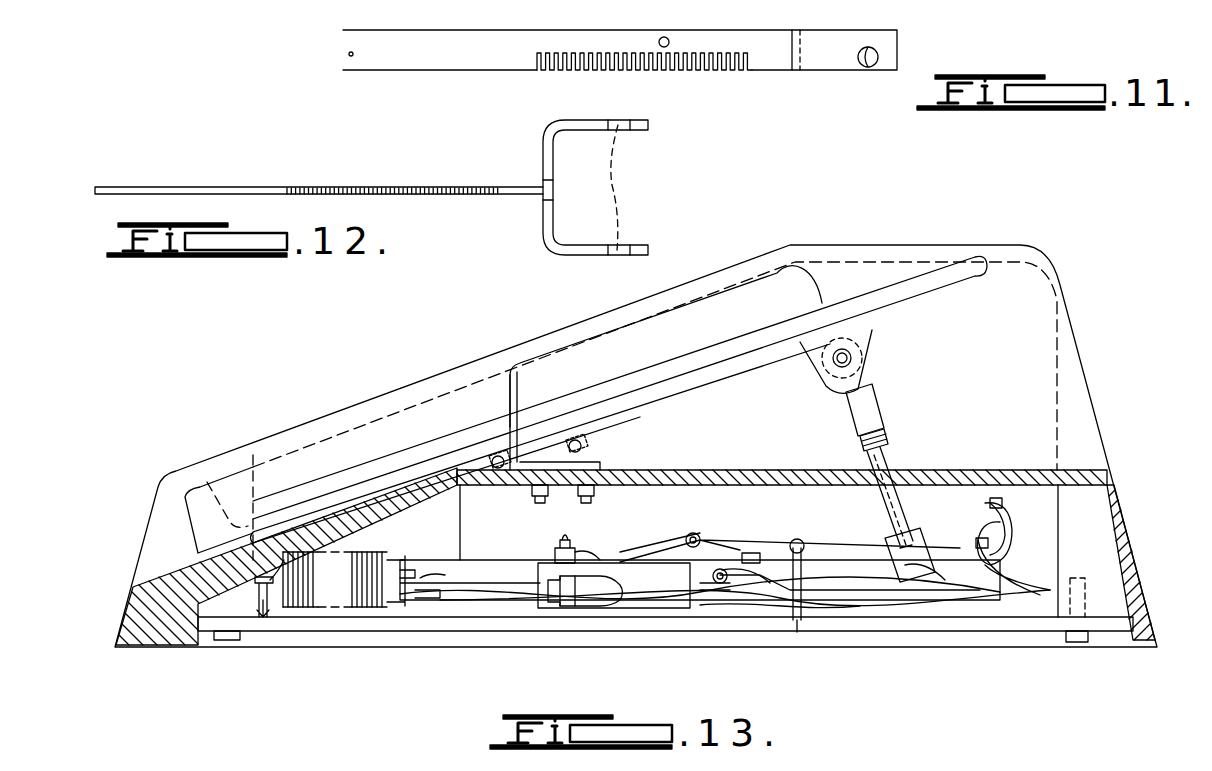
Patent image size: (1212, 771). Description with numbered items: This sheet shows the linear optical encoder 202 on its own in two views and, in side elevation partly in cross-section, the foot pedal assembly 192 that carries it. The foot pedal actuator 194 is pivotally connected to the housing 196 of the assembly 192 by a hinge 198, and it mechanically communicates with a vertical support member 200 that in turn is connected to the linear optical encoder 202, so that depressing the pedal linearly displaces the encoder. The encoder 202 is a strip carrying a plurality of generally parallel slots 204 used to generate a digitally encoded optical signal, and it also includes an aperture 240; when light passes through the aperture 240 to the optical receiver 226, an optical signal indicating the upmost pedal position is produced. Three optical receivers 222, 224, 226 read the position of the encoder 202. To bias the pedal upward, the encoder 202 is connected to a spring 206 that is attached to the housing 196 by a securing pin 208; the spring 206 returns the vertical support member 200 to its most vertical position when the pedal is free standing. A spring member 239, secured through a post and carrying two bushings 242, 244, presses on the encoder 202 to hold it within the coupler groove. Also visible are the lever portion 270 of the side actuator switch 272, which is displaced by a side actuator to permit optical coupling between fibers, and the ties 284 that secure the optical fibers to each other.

In FIG. 13, the foot pedal assembly 192 is at (1032, 245).
In FIG. 13, the foot pedal actuator 194 is at (742, 352).
In FIG. 13, the housing 196 is at (1110, 490).
In FIG. 13, the hinge 198 is at (598, 432).
In FIG. 13, the vertical support member 200 is at (887, 432).
In FIG. 11, the linear optical encoder 202 is at (903, 40).
In FIG. 12, the linear optical encoder 202 is at (190, 186).
In FIG. 13, the linear optical encoder 202 is at (428, 560).
In FIG. 11, the slots 204 is at (705, 72).
In FIG. 13, the spring 206 is at (305, 612).
In FIG. 13, the securing pin 208 is at (262, 640).
In FIG. 13, the optical receiver 222 is at (812, 585).
In FIG. 13, the optical receiver 224 is at (790, 600).
In FIG. 13, the optical receiver 226 is at (745, 592).
In FIG. 13, the spring member 239 is at (695, 533).
In FIG. 11, the aperture 240 is at (866, 68).
In FIG. 12, the aperture 240 is at (595, 187).
In FIG. 13, the bushing 242 is at (572, 548).
In FIG. 13, the bushing 244 is at (805, 548).
In FIG. 13, the lever portion 270 is at (720, 590).
In FIG. 13, the side actuator switch 272 is at (628, 575).
In FIG. 13, the ties 284 is at (985, 503).